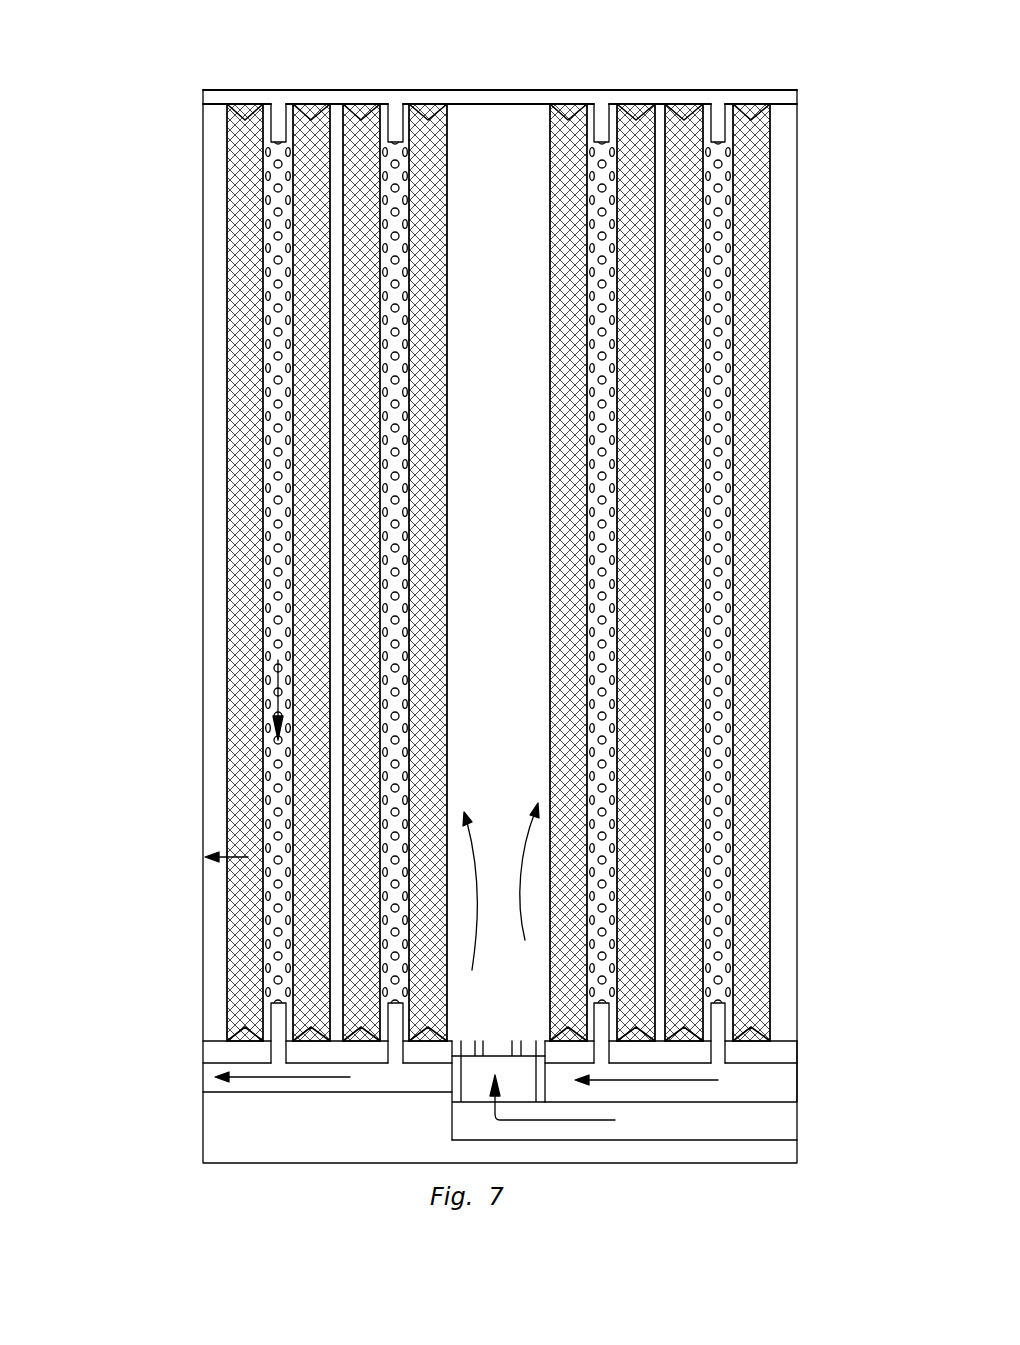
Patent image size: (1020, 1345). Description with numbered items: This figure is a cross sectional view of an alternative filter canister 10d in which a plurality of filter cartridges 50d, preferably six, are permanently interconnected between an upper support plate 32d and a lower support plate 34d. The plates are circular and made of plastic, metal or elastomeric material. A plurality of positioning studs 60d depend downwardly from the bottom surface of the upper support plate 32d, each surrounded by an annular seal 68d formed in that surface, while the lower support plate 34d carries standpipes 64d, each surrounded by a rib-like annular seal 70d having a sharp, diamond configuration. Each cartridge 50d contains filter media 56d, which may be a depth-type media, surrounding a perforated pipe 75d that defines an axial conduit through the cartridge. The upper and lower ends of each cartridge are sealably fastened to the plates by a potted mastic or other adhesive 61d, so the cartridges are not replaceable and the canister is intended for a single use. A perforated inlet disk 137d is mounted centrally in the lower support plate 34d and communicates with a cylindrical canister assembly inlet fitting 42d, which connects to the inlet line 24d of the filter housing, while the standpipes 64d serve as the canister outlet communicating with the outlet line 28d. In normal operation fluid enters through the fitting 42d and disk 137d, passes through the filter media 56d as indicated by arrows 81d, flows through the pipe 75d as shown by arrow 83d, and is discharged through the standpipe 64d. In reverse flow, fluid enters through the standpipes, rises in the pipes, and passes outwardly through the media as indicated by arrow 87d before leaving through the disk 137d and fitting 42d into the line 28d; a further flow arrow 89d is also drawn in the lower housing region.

The canister 10d is at (148, 109).
The inlet line 24d is at (650, 1141).
The outlet line 28d is at (287, 1092).
The upper support plate 32d is at (797, 95).
The lower support plate 34d is at (797, 1052).
The cylindrical canister assembly inlet fitting 42d is at (452, 1090).
The filter cartridge 50d is at (227, 462).
The filter media 56d is at (247, 292).
The positioning stud 60d is at (276, 112).
The adhesive 61d is at (556, 102).
The standpipe 64d is at (270, 1051).
The annular seal 68d is at (245, 118).
The rib-like annular seal 70d is at (245, 1030).
The perforated pipe 75d is at (263, 385).
The arrows 81d is at (476, 912).
The arrow 83d is at (278, 685).
The arrow 87d is at (243, 857).
The return flow arrow 89d is at (675, 1080).
The perforated inlet disk 137d is at (525, 1040).